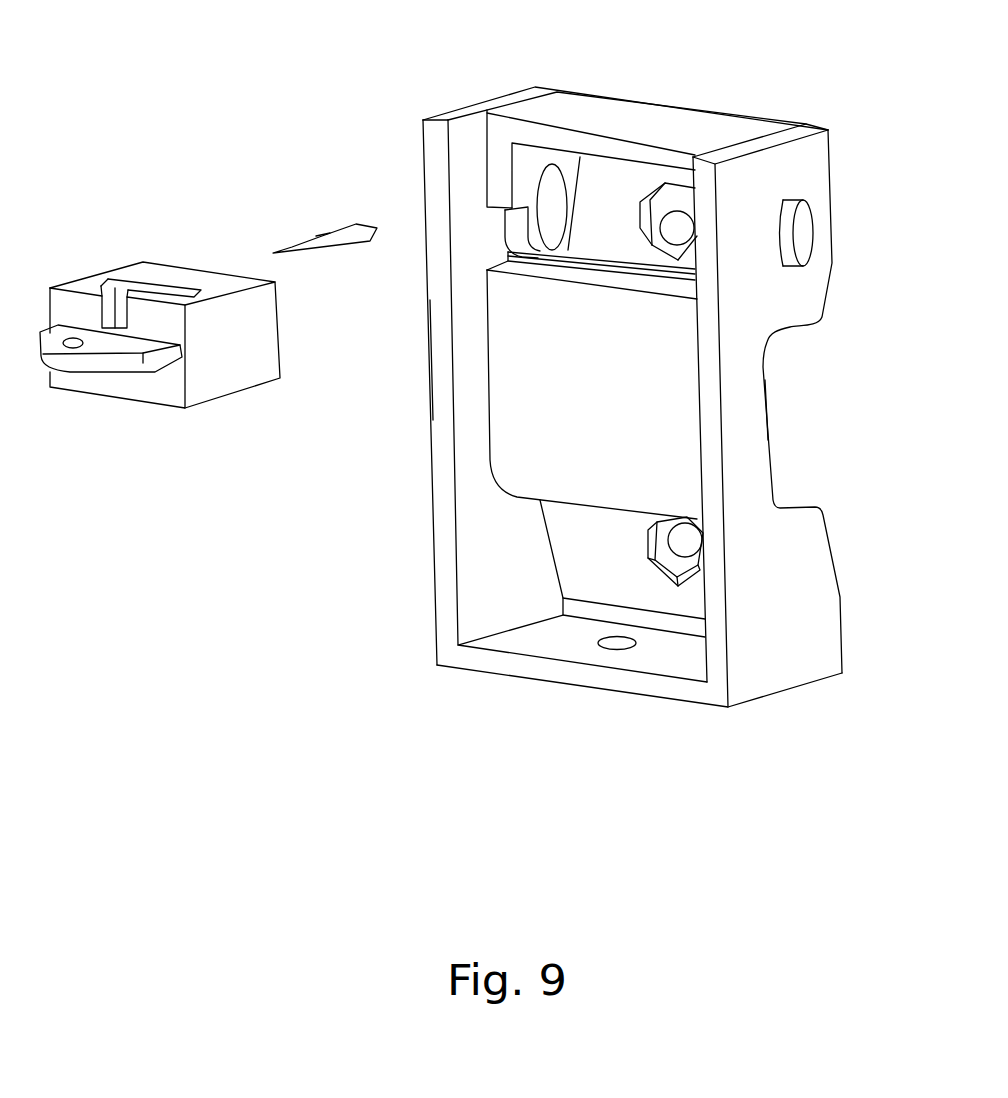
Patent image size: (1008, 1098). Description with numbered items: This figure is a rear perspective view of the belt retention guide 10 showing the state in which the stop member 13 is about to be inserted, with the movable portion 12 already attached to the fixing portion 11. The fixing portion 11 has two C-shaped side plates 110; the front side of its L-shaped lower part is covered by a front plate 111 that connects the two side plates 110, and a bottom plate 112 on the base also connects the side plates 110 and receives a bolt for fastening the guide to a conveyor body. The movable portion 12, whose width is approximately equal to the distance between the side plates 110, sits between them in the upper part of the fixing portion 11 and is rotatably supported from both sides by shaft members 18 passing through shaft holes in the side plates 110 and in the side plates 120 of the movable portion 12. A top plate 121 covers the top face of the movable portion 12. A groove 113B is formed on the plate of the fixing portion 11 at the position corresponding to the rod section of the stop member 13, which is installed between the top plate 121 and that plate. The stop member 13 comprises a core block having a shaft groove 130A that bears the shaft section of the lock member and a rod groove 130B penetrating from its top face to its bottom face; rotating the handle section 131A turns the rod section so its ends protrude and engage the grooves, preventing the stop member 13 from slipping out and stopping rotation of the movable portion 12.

The belt retention guide 10 is at (370, 711).
The fixing portion 11 is at (777, 665).
The movable portion 12 is at (702, 115).
The stop member 13 is at (248, 397).
The shaft member 18 is at (803, 233).
The side plate 110 is at (440, 354).
The front plate 111 is at (507, 425).
The bottom plate 112 is at (547, 645).
The groove 113B is at (513, 252).
The side plate 120 is at (522, 173).
The top plate 121 is at (597, 103).
The shaft groove 130A is at (114, 306).
The rod groove 130B is at (188, 288).
The handle section 131A is at (97, 363).